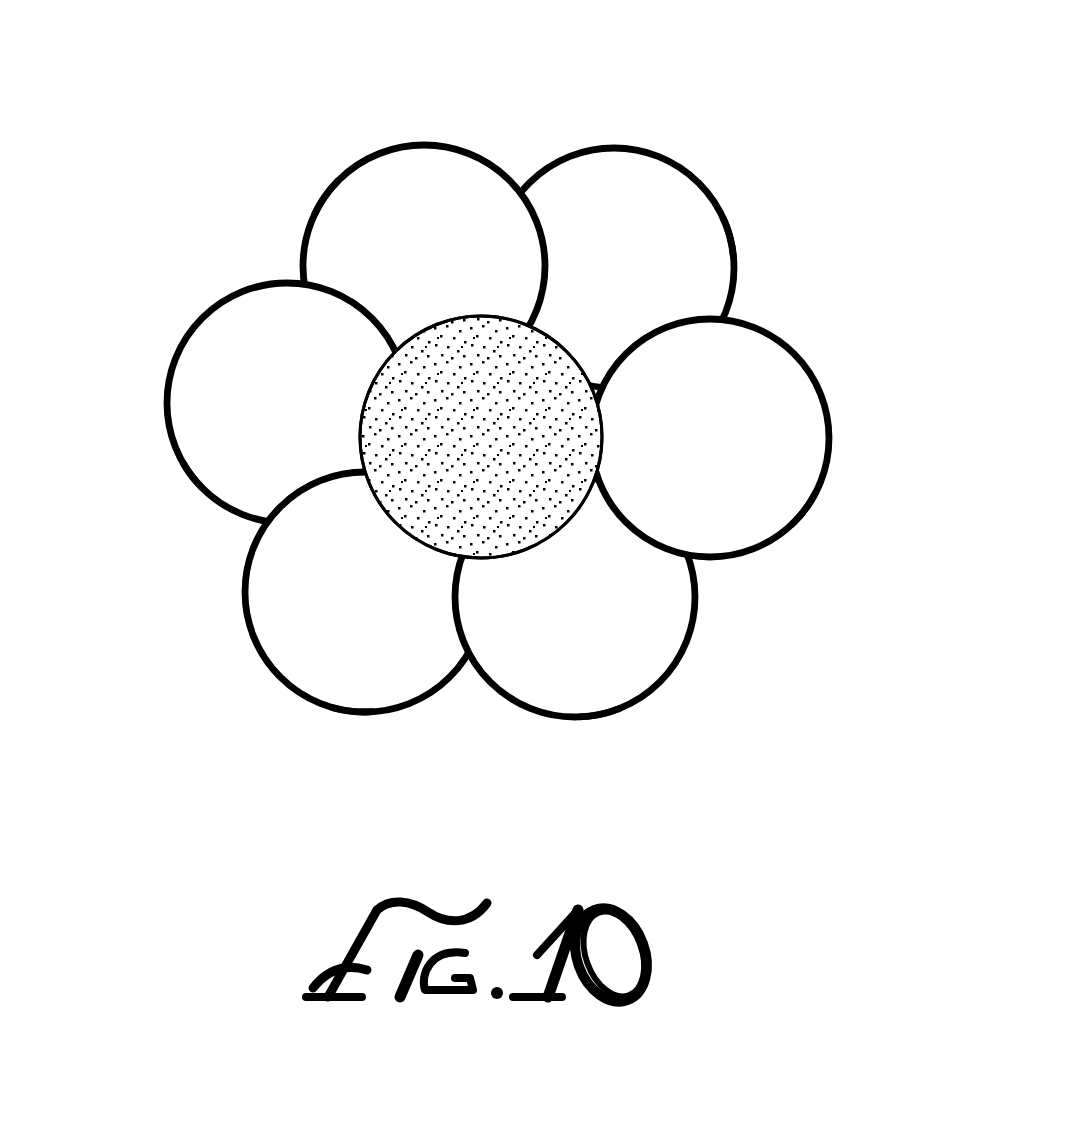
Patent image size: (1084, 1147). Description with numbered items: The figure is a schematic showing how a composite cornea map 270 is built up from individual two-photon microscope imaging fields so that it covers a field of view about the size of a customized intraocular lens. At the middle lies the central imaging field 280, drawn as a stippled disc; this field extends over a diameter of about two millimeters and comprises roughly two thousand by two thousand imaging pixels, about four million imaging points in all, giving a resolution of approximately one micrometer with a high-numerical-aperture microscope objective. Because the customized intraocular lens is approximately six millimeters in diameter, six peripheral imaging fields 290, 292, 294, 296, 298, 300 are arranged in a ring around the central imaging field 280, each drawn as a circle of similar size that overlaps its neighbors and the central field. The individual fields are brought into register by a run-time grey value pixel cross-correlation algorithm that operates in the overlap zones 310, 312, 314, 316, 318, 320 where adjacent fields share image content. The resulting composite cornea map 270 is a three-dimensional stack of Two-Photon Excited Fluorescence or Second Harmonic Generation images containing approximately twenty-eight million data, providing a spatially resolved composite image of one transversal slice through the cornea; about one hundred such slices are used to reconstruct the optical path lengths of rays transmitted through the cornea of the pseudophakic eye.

The composite cornea map 270 is at (580, 98).
The central imaging field 280 is at (487, 390).
The peripheral imaging field 290 is at (633, 200).
The peripheral imaging field 292 is at (752, 403).
The peripheral imaging field 294 is at (608, 633).
The peripheral imaging field 296 is at (335, 613).
The peripheral imaging field 298 is at (243, 390).
The peripheral imaging field 300 is at (398, 213).
The overlap zone 310 is at (733, 238).
The overlap zone 312 is at (808, 513).
The overlap zone 314 is at (602, 717).
The overlap zone 316 is at (350, 715).
The overlap zone 318 is at (197, 487).
The overlap zone 320 is at (323, 198).